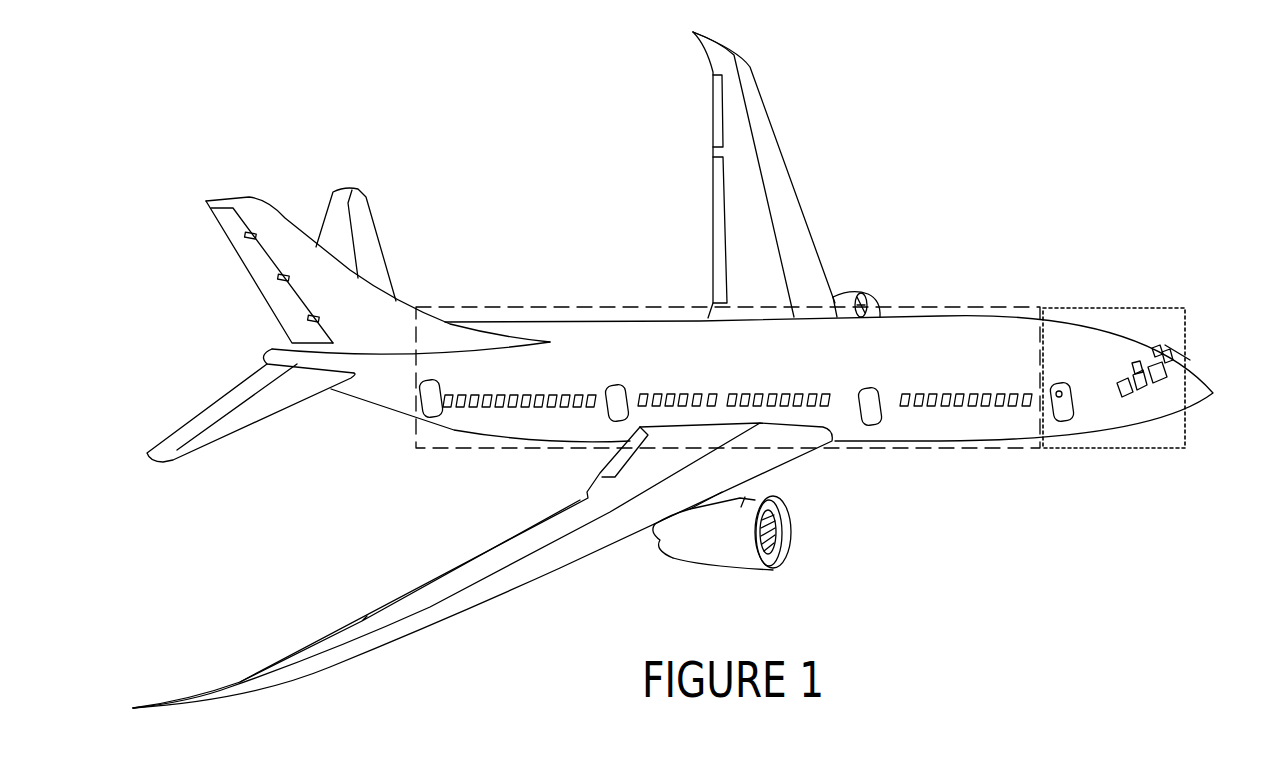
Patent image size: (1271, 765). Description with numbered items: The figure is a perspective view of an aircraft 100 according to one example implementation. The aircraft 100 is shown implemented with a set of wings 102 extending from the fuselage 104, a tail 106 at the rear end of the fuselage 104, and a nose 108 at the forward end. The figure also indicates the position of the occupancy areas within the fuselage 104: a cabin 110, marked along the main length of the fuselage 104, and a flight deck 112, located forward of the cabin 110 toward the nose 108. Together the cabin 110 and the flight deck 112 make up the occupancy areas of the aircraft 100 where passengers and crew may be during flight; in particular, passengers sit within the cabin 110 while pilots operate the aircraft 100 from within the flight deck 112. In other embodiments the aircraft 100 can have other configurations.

The aircraft 100 is at (686, 370).
The set of wings 102 is at (762, 103).
The fuselage 104 is at (564, 318).
The tail 106 is at (253, 215).
The nose 108 is at (1203, 393).
The cabin 110 is at (970, 307).
The flight deck 112 is at (1128, 307).